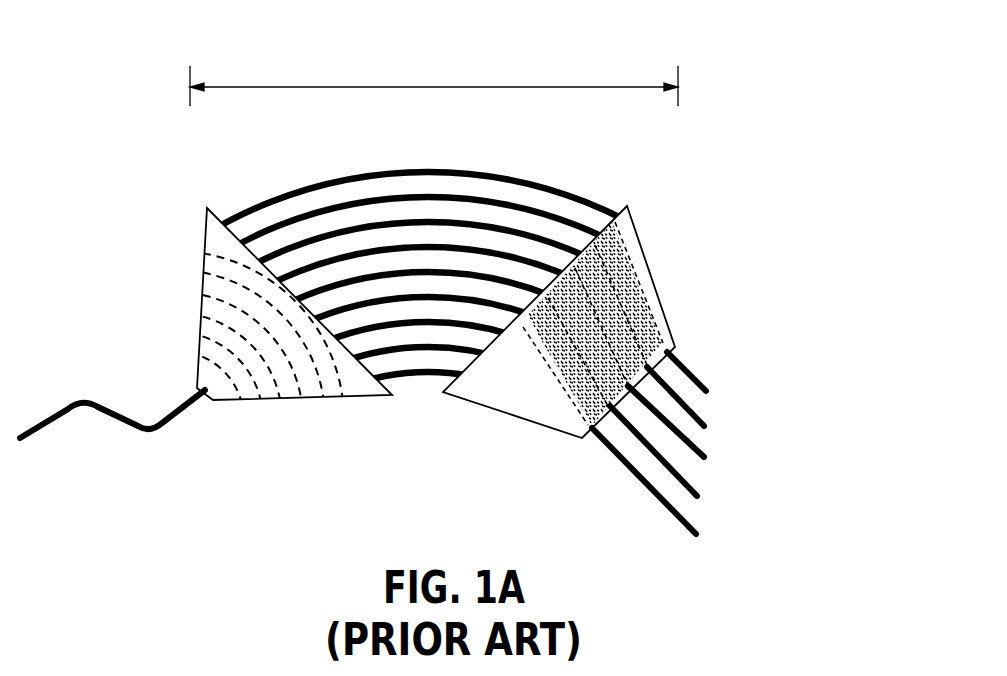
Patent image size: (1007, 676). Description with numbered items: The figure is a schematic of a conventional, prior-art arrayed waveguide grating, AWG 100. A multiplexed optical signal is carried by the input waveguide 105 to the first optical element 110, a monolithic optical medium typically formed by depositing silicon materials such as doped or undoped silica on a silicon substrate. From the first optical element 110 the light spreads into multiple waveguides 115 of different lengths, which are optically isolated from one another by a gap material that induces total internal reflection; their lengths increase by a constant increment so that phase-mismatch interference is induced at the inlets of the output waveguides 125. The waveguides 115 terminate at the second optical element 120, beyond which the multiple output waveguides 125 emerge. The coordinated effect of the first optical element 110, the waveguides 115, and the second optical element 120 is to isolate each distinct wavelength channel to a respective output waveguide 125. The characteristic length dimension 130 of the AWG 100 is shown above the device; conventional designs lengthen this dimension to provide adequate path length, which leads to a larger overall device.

The AWG 100 is at (823, 52).
The input waveguide 105 is at (68, 401).
The first optical element 110 is at (201, 246).
The waveguides 115 is at (405, 246).
The second optical element 120 is at (650, 273).
The output waveguides 125 is at (698, 377).
The characteristic length dimension 130 is at (430, 78).